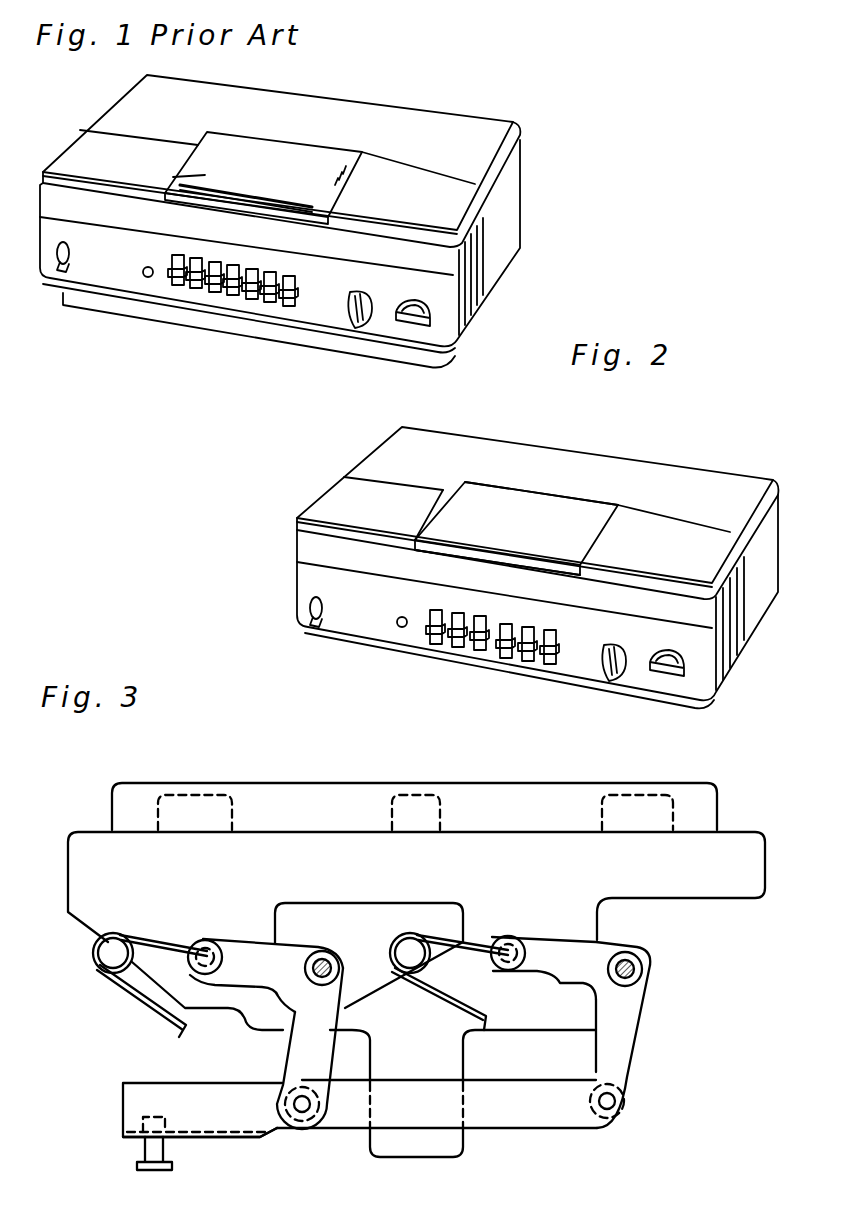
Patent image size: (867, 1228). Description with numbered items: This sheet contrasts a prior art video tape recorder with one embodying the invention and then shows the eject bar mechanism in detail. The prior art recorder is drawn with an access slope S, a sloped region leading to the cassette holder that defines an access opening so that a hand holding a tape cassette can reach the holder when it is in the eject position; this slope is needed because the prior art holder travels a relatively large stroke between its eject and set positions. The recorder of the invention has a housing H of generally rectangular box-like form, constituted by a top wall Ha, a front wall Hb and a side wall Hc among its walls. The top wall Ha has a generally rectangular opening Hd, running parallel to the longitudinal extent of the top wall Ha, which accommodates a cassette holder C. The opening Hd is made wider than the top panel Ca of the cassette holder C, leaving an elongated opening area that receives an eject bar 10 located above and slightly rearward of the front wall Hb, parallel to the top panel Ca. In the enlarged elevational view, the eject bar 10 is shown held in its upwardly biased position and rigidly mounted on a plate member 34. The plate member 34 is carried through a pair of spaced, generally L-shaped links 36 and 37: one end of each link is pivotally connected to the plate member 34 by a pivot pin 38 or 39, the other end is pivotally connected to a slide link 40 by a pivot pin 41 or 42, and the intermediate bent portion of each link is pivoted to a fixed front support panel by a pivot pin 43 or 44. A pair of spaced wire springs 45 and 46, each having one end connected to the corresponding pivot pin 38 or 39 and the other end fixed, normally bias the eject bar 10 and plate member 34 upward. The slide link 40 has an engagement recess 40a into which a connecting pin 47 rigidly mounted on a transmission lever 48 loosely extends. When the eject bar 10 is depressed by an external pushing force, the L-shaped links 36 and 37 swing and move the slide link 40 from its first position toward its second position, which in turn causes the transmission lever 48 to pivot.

In FIG. 1, the access slope S is at (205, 192).
In FIG. 2, the housing H is at (302, 498).
In FIG. 2, the top wall Ha is at (700, 484).
In FIG. 2, the front wall Hb is at (368, 620).
In FIG. 2, the side wall Hc is at (740, 630).
In FIG. 2, the opening Hd is at (435, 505).
In FIG. 2, the cassette holder C is at (528, 512).
In FIG. 2, the top panel Ca is at (492, 497).
In FIG. 2, the eject bar 10 is at (560, 548).
In FIG. 3, the eject bar 10 is at (277, 802).
In FIG. 3, the plate member 34 is at (393, 872).
In FIG. 3, the L-shaped link 36 is at (644, 1014).
In FIG. 3, the L-shaped link 37 is at (248, 932).
In FIG. 3, the pivot pin 38 is at (510, 952).
In FIG. 3, the pivot pin 39 is at (204, 955).
In FIG. 3, the slide link 40 is at (522, 1116).
In FIG. 3, the engagement recess 40a is at (175, 1135).
In FIG. 3, the pivot pin 41 is at (607, 1110).
In FIG. 3, the pivot pin 42 is at (303, 1110).
In FIG. 3, the pivot pin 43 is at (640, 962).
In FIG. 3, the pivot pin 44 is at (320, 965).
In FIG. 3, the wire spring 45 is at (440, 942).
In FIG. 3, the wire spring 46 is at (136, 935).
In FIG. 3, the connecting pin 47 is at (143, 1120).
In FIG. 3, the transmission lever 48 is at (137, 1165).